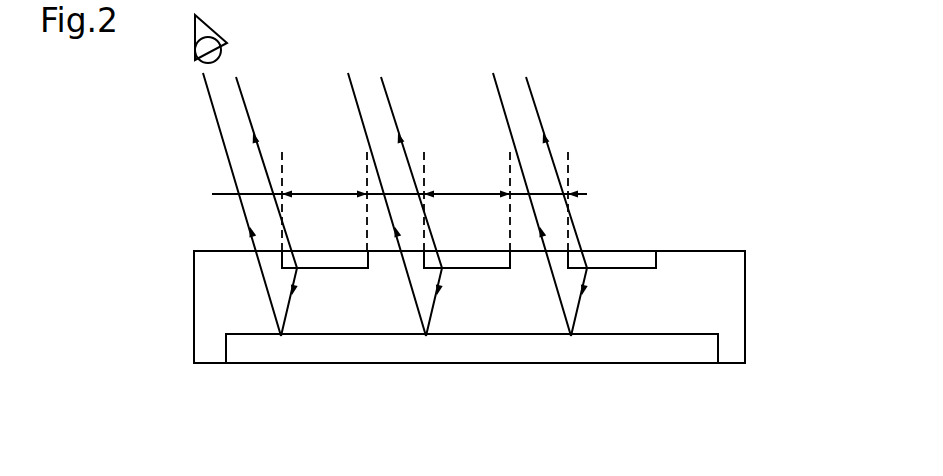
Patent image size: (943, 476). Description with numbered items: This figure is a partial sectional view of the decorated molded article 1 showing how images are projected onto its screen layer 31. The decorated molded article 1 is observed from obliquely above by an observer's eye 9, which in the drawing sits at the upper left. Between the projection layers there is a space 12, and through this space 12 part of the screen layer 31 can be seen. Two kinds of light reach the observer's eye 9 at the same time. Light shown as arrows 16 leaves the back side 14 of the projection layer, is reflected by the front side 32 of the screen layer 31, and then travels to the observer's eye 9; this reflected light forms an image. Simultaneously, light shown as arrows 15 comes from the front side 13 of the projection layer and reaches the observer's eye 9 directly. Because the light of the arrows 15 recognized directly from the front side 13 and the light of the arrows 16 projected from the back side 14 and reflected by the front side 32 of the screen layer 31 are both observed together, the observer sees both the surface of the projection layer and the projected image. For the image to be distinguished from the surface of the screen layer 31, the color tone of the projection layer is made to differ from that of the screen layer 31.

The decorated molded article 1 is at (680, 148).
The observer's eye 9 is at (191, 39).
The space 12 is at (253, 194).
The front side of the projection layer 13 is at (305, 250).
The back side of the projection layer 14 is at (626, 268).
The arrows 15 is at (244, 103).
The arrows 16 is at (218, 119).
The screen layer 31 is at (305, 353).
The front side of the screen layer 32 is at (667, 334).